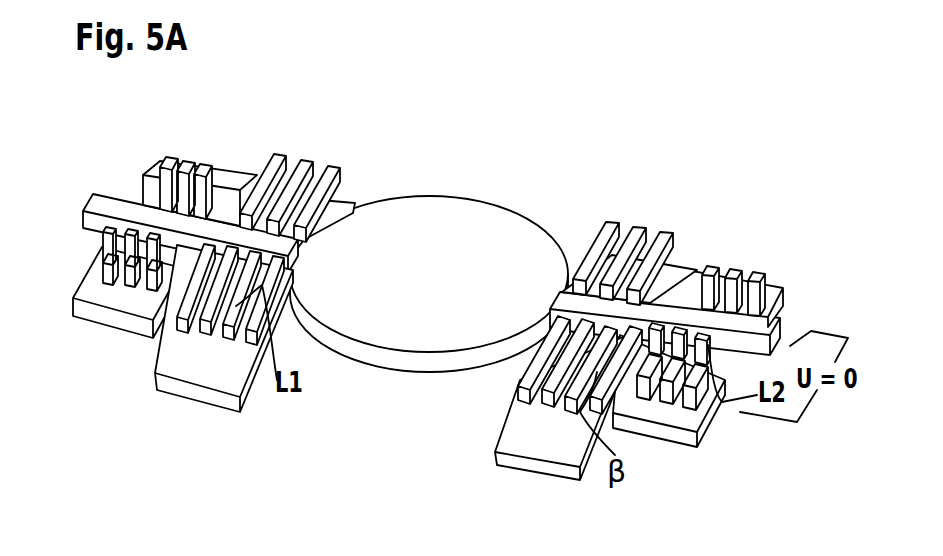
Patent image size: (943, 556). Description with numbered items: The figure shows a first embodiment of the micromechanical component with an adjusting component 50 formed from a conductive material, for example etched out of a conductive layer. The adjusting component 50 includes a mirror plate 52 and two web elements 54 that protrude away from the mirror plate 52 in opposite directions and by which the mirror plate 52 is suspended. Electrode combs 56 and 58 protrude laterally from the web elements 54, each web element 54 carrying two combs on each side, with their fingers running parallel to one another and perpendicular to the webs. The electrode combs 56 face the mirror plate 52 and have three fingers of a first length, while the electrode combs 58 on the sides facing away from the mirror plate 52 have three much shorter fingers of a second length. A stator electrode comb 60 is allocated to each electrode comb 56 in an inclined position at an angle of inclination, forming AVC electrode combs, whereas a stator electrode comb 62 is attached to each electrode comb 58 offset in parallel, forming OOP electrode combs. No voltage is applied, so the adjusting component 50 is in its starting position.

The adjusting component 50 is at (362, 371).
The mirror plate 52 is at (442, 300).
The web element 54 is at (207, 230).
The electrode comb 56 is at (323, 173).
The electrode comb 58 is at (198, 180).
The stator electrode comb 60 is at (343, 200).
The stator electrode comb 62 is at (140, 335).